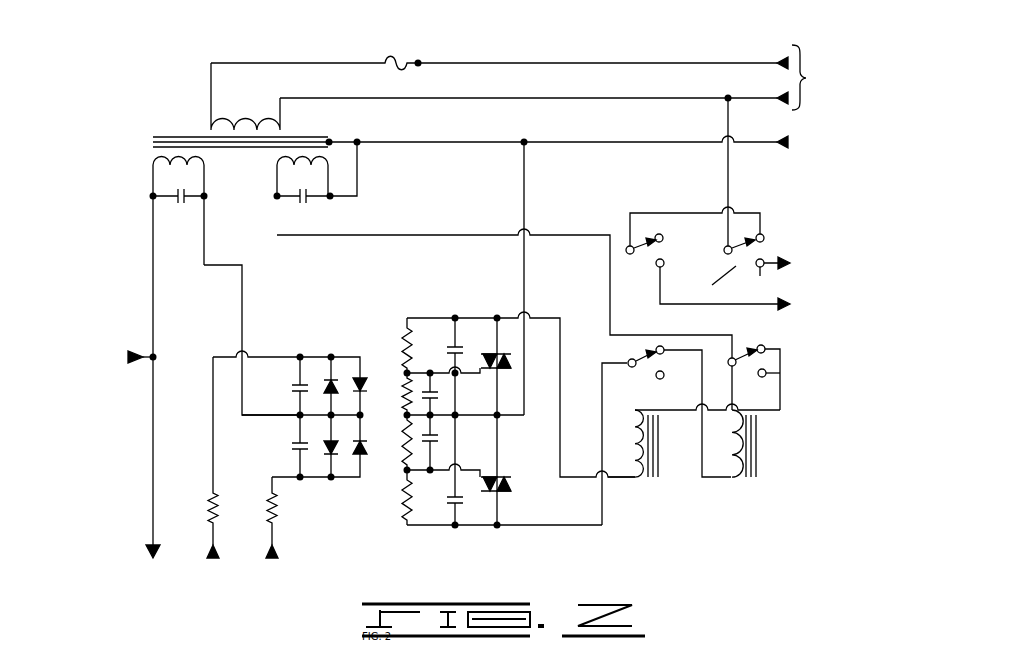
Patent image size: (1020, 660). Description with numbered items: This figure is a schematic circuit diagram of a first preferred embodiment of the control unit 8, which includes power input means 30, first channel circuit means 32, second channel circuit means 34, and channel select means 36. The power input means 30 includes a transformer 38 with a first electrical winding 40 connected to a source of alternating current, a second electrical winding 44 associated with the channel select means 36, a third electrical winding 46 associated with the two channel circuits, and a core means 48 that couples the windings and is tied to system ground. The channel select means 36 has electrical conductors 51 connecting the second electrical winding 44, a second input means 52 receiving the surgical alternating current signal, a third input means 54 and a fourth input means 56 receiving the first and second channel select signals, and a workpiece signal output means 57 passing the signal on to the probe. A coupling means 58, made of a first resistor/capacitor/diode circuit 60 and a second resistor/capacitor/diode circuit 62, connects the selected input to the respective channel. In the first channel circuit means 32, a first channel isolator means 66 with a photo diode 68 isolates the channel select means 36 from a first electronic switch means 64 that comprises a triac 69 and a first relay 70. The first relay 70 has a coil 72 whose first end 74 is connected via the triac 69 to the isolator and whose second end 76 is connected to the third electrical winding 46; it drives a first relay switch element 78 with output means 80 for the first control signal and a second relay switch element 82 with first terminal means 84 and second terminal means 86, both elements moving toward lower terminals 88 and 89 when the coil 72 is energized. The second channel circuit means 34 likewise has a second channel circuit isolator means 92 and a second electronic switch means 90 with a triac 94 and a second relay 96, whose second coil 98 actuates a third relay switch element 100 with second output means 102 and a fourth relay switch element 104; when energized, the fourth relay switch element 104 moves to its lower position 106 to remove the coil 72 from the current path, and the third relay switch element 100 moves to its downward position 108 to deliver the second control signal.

The control unit 8 is at (764, 545).
The power input means 30 is at (180, 92).
The first channel circuit means 32 is at (499, 288).
The second channel circuit means 34 is at (620, 542).
The channel select means 36 is at (140, 465).
The transformer 38 is at (148, 138).
The first electrical winding 40 is at (248, 118).
The second electrical winding 44 is at (160, 170).
The third electrical winding 46 is at (285, 170).
The core means 48 is at (312, 136).
The electrical conductors 51 is at (202, 252).
The second input means 52 is at (142, 372).
The third input means 54 is at (226, 552).
The fourth input means 56 is at (285, 552).
The workpiece signal output means 57 is at (140, 552).
The coupling means 58 is at (198, 410).
The first resistor/capacitor/diode circuit 60 is at (312, 340).
The second resistor/capacitor/diode circuit 62 is at (300, 492).
The first electronic switch means 64 is at (655, 496).
The first channel isolator means 66 is at (418, 302).
The photo diode 68 is at (403, 492).
The triac 69 is at (505, 345).
The first relay 70 is at (653, 198).
The coil 72 is at (633, 456).
The first end 74 is at (620, 478).
The second end 76 is at (633, 416).
The first relay switch element 78 is at (646, 244).
The output means 80 is at (653, 284).
The second relay switch element 82 is at (620, 350).
The first terminal means 84 is at (663, 354).
The second terminal means 86 is at (628, 366).
The lower terminal 88 is at (665, 268).
The lower terminal 89 is at (658, 378).
The second electronic switch means 90 is at (786, 446).
The second channel circuit isolator means 92 is at (412, 535).
The triac 94 is at (499, 470).
The second relay 96 is at (742, 198).
The second coil 98 is at (732, 455).
The third relay switch element 100 is at (738, 266).
The second output means 102 is at (770, 248).
The fourth relay switch element 104 is at (746, 350).
The lower position 106 is at (767, 373).
The downward position 108 is at (760, 278).